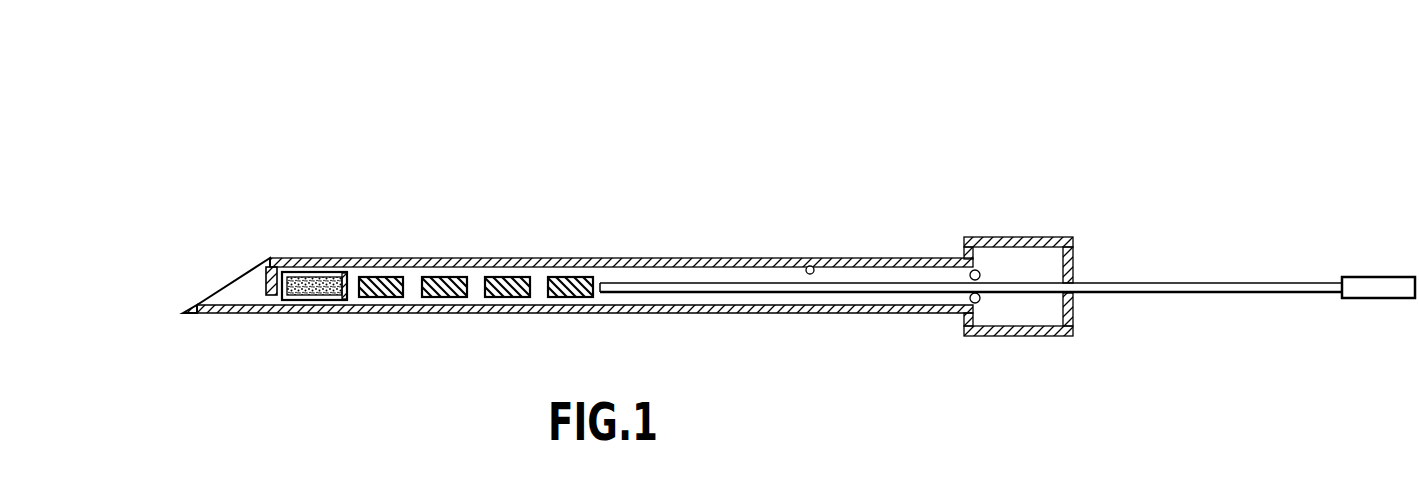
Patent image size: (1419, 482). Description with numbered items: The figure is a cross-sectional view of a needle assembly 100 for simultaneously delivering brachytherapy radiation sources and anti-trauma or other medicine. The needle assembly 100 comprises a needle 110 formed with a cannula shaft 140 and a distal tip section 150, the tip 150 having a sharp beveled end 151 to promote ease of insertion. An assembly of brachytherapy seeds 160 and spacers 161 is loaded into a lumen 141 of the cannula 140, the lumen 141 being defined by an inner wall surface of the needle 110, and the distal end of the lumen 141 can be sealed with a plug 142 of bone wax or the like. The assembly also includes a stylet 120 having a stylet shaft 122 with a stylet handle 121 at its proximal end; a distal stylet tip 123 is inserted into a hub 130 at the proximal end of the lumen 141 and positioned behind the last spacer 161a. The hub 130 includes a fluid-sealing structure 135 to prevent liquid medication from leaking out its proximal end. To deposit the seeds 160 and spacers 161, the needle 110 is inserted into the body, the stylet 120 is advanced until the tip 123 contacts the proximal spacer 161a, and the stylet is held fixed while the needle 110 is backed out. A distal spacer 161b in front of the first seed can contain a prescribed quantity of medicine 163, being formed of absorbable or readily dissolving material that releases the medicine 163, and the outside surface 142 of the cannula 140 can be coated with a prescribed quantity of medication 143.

The needle assembly 100 is at (876, 112).
The needle 110 is at (874, 228).
The stylet 120 is at (1186, 306).
The stylet handle 121 is at (1380, 299).
The stylet shaft 122 is at (1162, 282).
The distal stylet tip 123 is at (600, 313).
The hub 130 is at (1001, 221).
The fluid-sealing structure 135 is at (978, 303).
The cannula shaft 140 is at (732, 260).
The lumen 141 is at (810, 266).
The plug 142 is at (667, 259).
The medication 143 is at (523, 262).
The distal tip section 150 is at (243, 275).
The beveled end 151 is at (186, 299).
The brachytherapy seeds 160 is at (380, 277).
The spacers 161 is at (445, 277).
The last spacer 161a is at (573, 297).
The distal spacer 161b is at (297, 300).
The medicine 163 is at (347, 283).